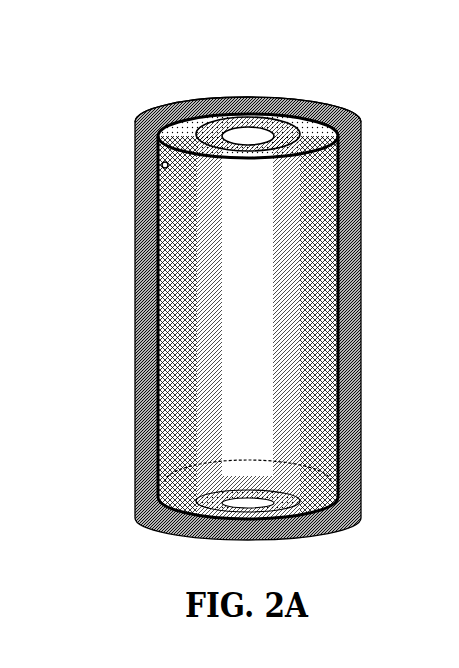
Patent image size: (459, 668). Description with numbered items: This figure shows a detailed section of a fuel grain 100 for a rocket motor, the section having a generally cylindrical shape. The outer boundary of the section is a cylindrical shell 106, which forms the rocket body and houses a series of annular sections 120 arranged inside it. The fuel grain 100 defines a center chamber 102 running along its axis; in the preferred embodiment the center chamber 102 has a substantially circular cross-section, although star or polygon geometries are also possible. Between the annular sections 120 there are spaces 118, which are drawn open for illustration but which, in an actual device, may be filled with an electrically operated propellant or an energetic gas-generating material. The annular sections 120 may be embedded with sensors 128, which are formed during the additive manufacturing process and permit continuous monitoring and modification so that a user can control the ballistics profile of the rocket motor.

The fuel grain 100 is at (137, 118).
The center chamber 102 is at (255, 135).
The cylindrical shell 106 is at (133, 413).
The spaces 118 is at (185, 320).
The annular sections 120 is at (162, 188).
The sensors 128 is at (161, 164).